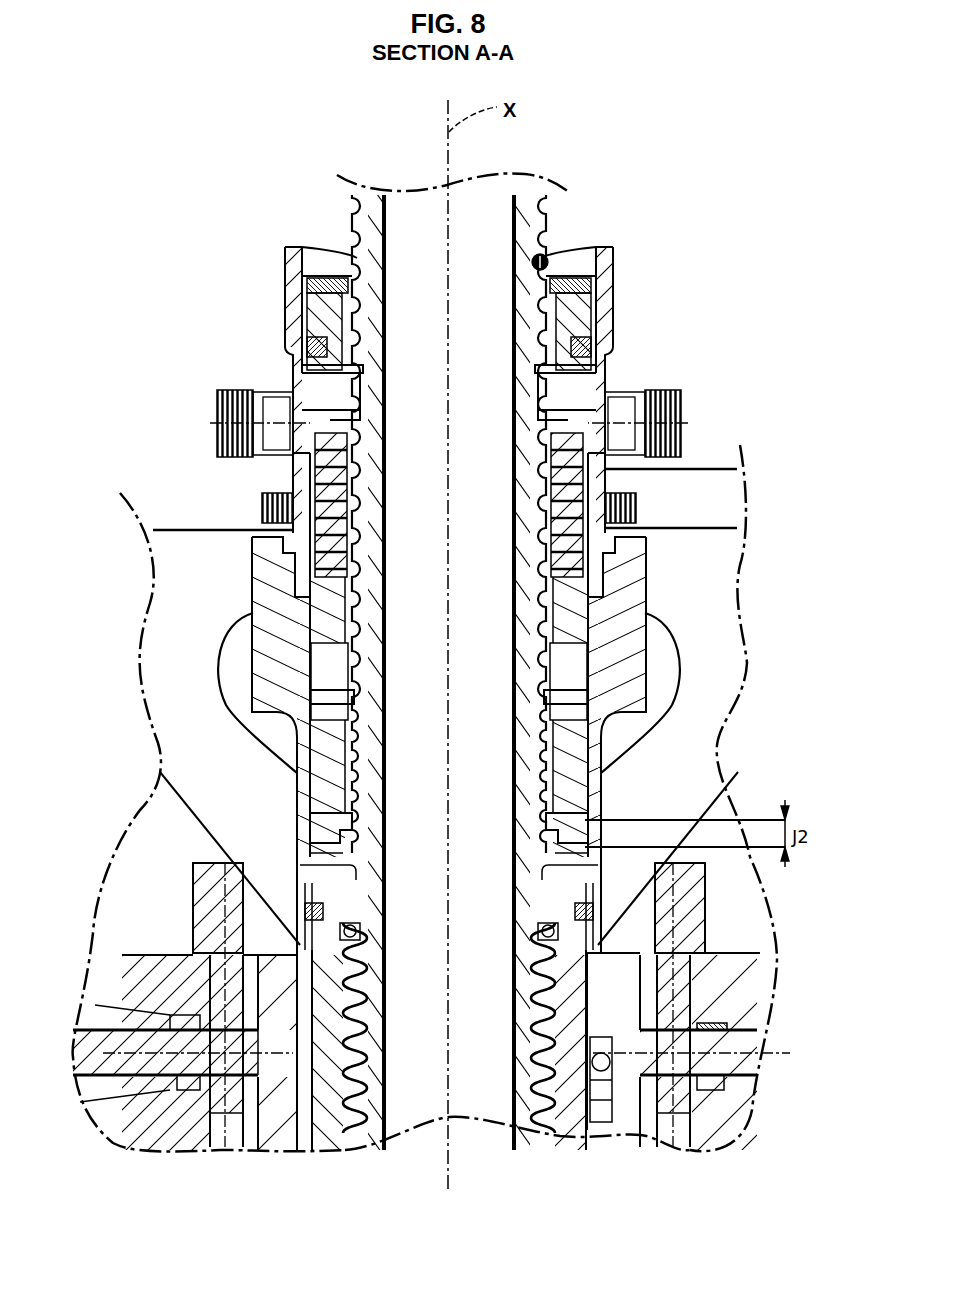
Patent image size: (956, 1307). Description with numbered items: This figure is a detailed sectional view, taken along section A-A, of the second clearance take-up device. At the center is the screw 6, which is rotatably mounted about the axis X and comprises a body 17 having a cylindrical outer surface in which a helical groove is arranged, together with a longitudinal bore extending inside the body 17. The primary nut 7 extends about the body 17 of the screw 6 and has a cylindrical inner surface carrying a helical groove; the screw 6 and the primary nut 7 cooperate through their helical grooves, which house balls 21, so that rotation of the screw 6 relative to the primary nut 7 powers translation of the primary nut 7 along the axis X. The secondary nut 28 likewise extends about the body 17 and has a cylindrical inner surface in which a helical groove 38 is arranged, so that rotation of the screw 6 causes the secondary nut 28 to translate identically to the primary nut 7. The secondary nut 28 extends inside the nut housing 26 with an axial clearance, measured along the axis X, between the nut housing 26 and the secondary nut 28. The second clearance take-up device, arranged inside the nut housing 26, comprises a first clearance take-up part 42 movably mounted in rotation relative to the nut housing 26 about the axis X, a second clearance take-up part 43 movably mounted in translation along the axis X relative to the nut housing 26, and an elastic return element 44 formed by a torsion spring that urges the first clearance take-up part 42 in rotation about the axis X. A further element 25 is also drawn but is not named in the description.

The screw 6 is at (523, 222).
The seal ring 25 is at (480, 260).
The elastic return element 44 is at (565, 486).
The first clearance take-up part 42 is at (592, 594).
The nut housing 26 is at (620, 653).
The second clearance take-up part 43 is at (570, 717).
The helical groove 38 is at (543, 745).
The secondary nut 28 is at (563, 772).
The body 17 is at (525, 838).
The primary nut 7 is at (572, 990).
The balls 21 is at (545, 1022).